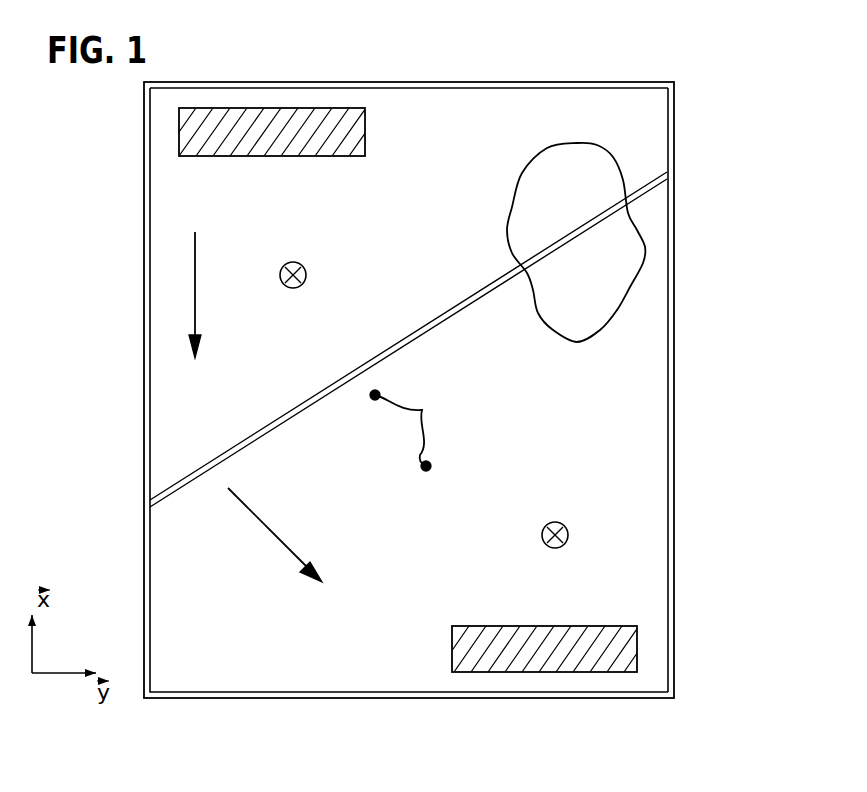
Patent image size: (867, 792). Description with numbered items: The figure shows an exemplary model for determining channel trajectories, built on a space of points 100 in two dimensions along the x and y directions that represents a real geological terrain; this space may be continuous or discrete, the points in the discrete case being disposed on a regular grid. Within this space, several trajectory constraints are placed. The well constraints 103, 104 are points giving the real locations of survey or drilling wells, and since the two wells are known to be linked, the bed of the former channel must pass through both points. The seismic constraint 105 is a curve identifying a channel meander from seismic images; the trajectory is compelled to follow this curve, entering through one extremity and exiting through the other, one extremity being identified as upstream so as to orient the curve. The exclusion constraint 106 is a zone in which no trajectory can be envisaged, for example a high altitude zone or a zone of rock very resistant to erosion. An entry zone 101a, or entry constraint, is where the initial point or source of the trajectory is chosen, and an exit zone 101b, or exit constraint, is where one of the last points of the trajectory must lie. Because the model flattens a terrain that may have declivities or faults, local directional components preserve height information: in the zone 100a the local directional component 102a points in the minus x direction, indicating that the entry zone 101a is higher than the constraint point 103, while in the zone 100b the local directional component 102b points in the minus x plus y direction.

The space of points 100 is at (222, 80).
The zone 100a is at (618, 80).
The zone 100b is at (674, 214).
The entry zone 101a is at (329, 135).
The exit zone 101b is at (603, 652).
The local directional component 102a is at (192, 270).
The local directional component 102b is at (266, 521).
The well constraint 103 is at (306, 262).
The well constraint 104 is at (549, 521).
The seismic constraint 105 is at (428, 406).
The exclusion constraint 106 is at (617, 155).